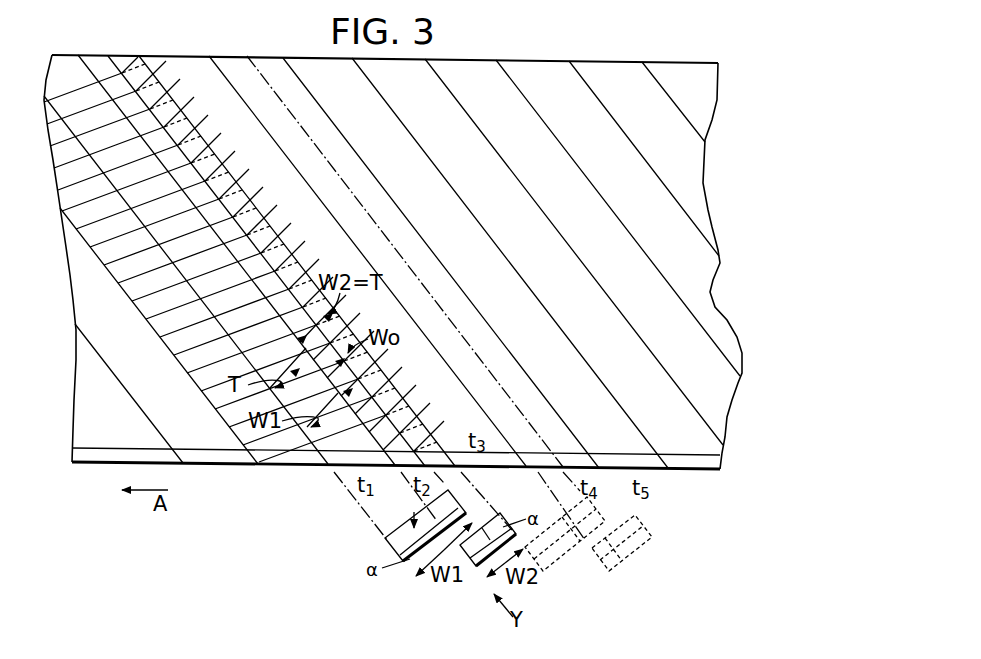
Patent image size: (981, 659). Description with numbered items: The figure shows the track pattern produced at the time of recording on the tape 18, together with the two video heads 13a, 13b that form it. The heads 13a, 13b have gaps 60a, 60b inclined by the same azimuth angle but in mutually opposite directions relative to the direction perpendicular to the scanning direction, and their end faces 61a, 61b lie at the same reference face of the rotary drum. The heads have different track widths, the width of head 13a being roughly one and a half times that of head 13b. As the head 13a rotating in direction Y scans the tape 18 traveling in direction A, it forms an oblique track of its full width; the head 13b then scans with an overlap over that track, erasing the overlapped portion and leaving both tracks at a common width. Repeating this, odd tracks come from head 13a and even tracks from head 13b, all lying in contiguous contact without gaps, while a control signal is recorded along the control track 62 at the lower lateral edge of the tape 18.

The tape 18 is at (102, 466).
The control track 62 is at (222, 462).
The gap 60a is at (393, 538).
The gap 60b is at (502, 516).
The end face 61a is at (406, 564).
The end face 61b is at (466, 558).
The video head 13a is at (390, 541).
The video head 13b is at (475, 568).